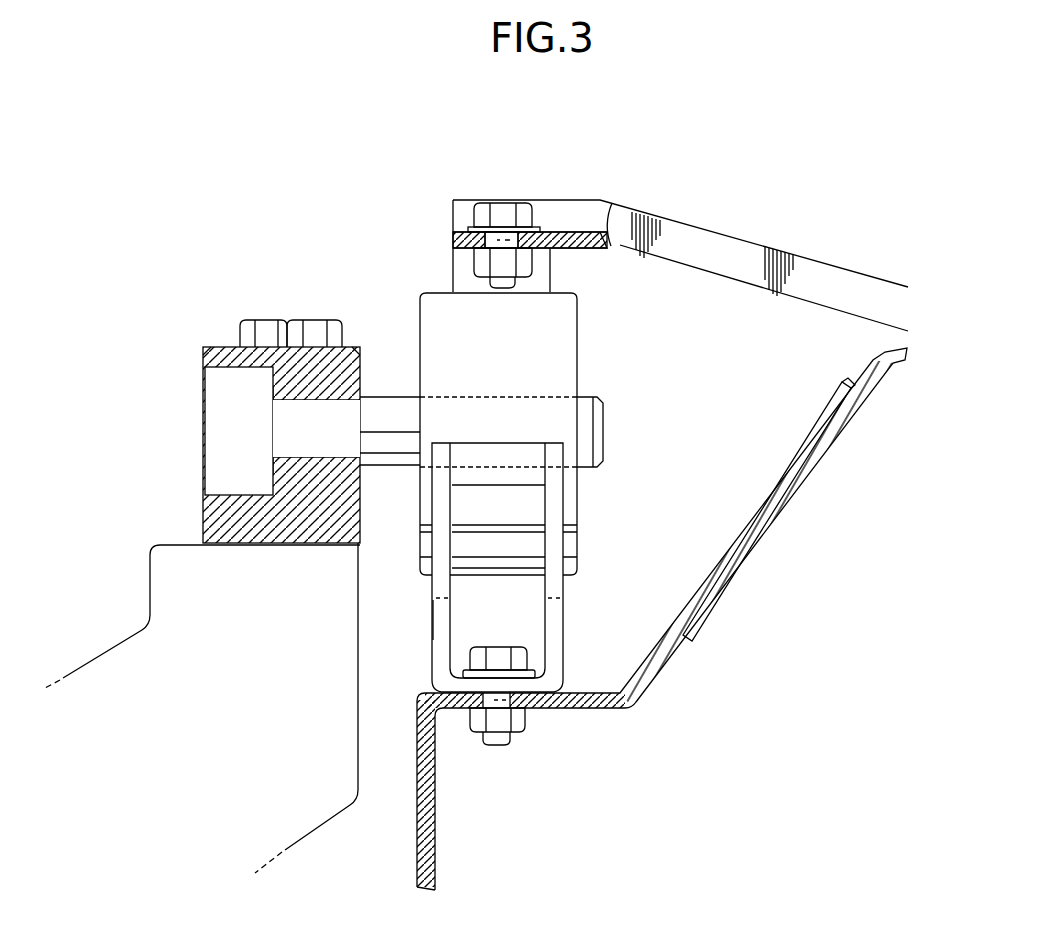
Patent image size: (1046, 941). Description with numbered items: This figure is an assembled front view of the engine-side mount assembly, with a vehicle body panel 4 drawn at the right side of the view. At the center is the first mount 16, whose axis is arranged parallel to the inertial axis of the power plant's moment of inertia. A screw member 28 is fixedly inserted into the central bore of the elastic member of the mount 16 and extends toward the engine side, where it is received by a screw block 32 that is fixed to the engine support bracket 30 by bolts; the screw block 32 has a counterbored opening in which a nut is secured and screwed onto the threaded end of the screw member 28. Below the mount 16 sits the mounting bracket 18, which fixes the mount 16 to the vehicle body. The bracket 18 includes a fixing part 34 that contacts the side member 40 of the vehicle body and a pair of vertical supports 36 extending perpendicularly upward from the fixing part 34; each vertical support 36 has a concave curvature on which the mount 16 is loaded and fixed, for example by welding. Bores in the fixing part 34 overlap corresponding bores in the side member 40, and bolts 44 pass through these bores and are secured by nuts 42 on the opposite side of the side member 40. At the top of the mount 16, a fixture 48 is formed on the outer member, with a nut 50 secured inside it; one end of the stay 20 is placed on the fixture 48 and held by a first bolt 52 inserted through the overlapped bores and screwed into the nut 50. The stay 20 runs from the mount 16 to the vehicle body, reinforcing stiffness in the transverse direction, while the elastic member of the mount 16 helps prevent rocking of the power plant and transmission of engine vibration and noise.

The vehicle body panel 4 is at (885, 365).
The first mount 16 is at (597, 351).
The mounting bracket 18 is at (579, 644).
The stay 20 is at (720, 243).
The screw member 28 is at (400, 410).
The engine support bracket 30 is at (160, 545).
The screw block 32 is at (207, 345).
The fixing part 34 is at (465, 715).
The vertical supports 36 is at (440, 598).
The side member 40 is at (622, 702).
The nuts 42 is at (517, 720).
The bolts 44 is at (503, 655).
The fixture 48 is at (545, 240).
The nut 50 is at (480, 262).
The first bolt 52 is at (505, 210).